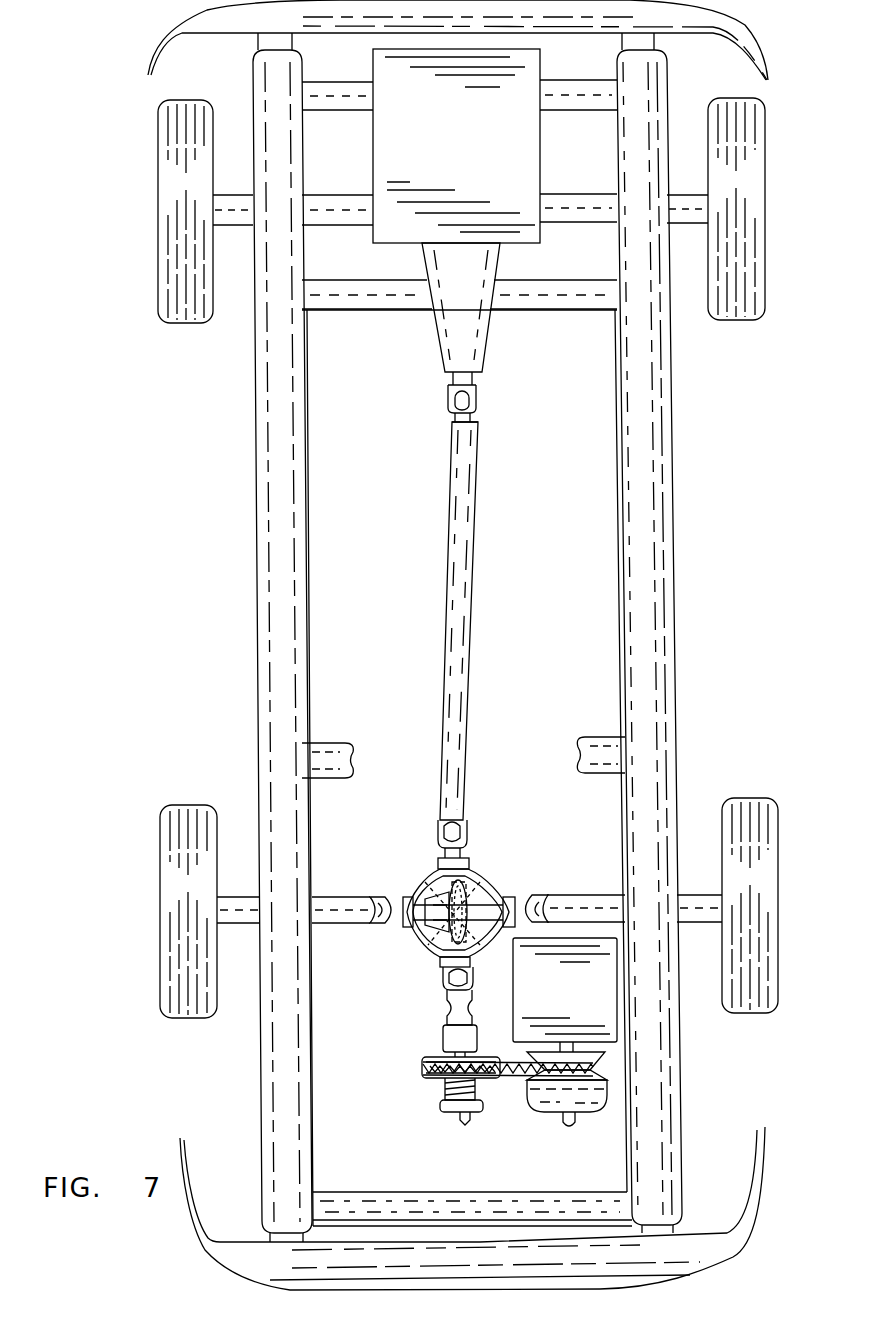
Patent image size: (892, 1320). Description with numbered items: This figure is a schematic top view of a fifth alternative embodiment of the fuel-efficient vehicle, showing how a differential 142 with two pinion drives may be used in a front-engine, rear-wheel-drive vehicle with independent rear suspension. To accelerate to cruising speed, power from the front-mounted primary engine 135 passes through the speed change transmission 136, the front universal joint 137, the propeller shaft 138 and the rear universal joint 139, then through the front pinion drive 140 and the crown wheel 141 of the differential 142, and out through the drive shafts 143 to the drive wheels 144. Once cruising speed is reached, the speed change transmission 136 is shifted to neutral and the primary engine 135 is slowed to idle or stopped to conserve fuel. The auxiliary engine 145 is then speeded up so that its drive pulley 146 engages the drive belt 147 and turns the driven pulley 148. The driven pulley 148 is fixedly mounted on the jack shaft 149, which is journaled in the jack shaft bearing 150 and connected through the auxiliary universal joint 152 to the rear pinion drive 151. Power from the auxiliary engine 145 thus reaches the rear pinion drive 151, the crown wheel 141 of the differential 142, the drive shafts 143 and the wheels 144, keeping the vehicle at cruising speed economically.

The primary engine 135 is at (481, 170).
The speed change transmission 136 is at (484, 307).
The front universal joint 137 is at (480, 395).
The propeller shaft 138 is at (472, 610).
The rear universal joint 139 is at (466, 838).
The front pinion drive 140 is at (469, 853).
The crown wheel 141 is at (485, 890).
The differential 142 is at (427, 943).
The drive shafts 143 is at (327, 897).
The wheels 144 is at (160, 870).
The auxiliary engine 145 is at (588, 1006).
The drive pulley 146 is at (583, 1117).
The drive belt 147 is at (513, 1078).
The driven pulley 148 is at (425, 1078).
The jack shaft 149 is at (457, 1120).
The jack shaft bearing 150 is at (443, 1038).
The rear pinion drive 151 is at (447, 963).
The auxiliary universal joint 152 is at (447, 990).